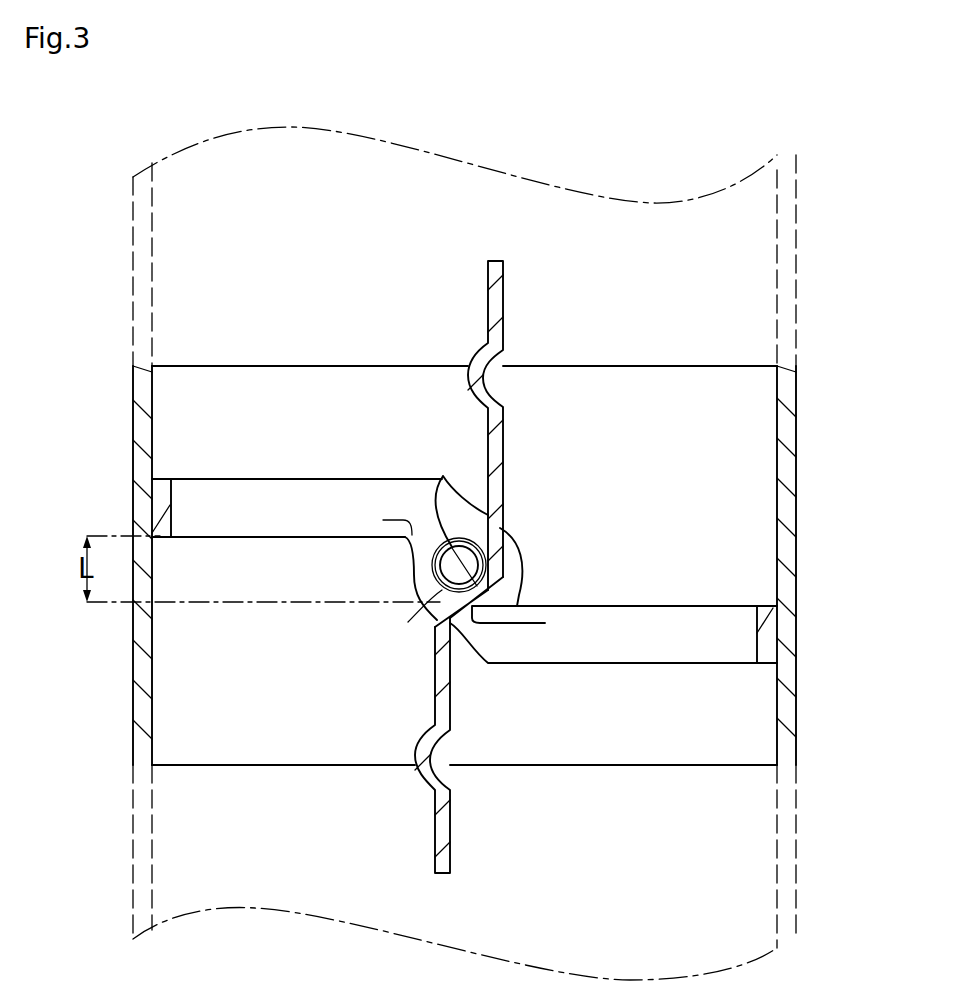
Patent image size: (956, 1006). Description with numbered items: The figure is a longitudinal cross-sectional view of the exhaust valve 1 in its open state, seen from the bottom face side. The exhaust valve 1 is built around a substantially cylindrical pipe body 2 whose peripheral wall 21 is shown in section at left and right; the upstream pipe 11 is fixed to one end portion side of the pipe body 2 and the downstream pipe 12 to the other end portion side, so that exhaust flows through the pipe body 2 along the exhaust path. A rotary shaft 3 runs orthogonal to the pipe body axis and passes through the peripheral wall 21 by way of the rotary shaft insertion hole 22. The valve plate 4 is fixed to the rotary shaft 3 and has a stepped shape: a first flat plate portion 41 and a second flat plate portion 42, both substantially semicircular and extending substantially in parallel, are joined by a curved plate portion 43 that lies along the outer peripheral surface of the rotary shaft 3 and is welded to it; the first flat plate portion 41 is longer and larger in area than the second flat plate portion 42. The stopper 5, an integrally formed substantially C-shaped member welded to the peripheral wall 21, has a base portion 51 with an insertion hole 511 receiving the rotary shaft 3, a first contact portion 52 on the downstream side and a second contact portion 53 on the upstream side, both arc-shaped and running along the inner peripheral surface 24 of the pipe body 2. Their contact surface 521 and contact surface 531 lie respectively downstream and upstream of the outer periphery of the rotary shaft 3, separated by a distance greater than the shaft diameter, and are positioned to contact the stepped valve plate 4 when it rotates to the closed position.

The exhaust valve 1 is at (480, 553).
The pipe body 2 is at (480, 553).
The rotary shaft 3 is at (452, 565).
The valve plate 4 is at (478, 567).
The stopper 5 is at (586, 570).
The upstream pipe 11 is at (794, 263).
The downstream pipe 12 is at (797, 870).
The peripheral wall 21 is at (797, 474).
The rotary shaft insertion hole 22 is at (408, 620).
The inner peripheral surface 24 is at (152, 637).
The first flat plate portion 41 is at (505, 428).
The second flat plate portion 42 is at (436, 823).
The curved plate portion 43 is at (500, 528).
The base portion 51 is at (522, 549).
The first contact portion 52 is at (657, 655).
The second contact portion 53 is at (297, 530).
The insertion hole 511 is at (443, 476).
The contact surface 521 is at (745, 594).
The contact surface 531 is at (277, 540).